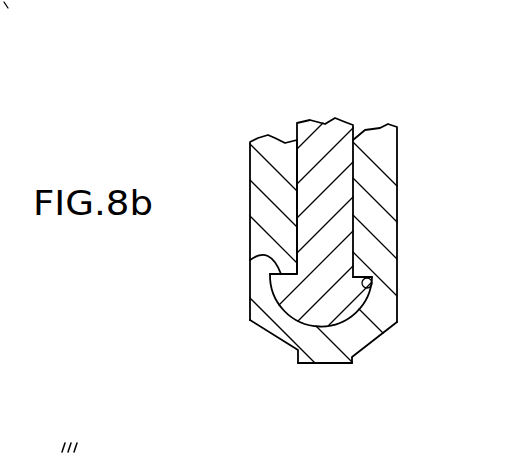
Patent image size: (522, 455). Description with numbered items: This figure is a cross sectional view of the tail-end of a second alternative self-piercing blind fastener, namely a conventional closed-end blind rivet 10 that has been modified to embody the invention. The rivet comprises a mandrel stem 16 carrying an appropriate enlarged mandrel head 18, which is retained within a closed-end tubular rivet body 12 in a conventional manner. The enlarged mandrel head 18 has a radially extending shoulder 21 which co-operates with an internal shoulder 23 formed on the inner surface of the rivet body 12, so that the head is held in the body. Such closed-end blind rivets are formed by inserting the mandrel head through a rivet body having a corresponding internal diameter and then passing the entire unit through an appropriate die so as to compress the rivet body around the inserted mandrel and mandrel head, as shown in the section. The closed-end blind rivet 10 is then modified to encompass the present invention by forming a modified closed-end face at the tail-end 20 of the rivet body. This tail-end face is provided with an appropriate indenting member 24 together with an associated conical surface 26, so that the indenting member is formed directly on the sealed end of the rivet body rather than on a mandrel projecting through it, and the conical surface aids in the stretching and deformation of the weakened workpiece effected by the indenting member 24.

The closed-end blind rivet 10 is at (425, 114).
The closed-end tubular rivet body 12 is at (385, 203).
The mandrel stem 16 is at (318, 140).
The enlarged mandrel head 18 is at (362, 309).
The tail-end 20 is at (230, 318).
The radially extending shoulder 21 is at (253, 257).
The internal shoulder 23 is at (372, 280).
The indenting member 24 is at (335, 365).
The conical surface 26 is at (280, 342).